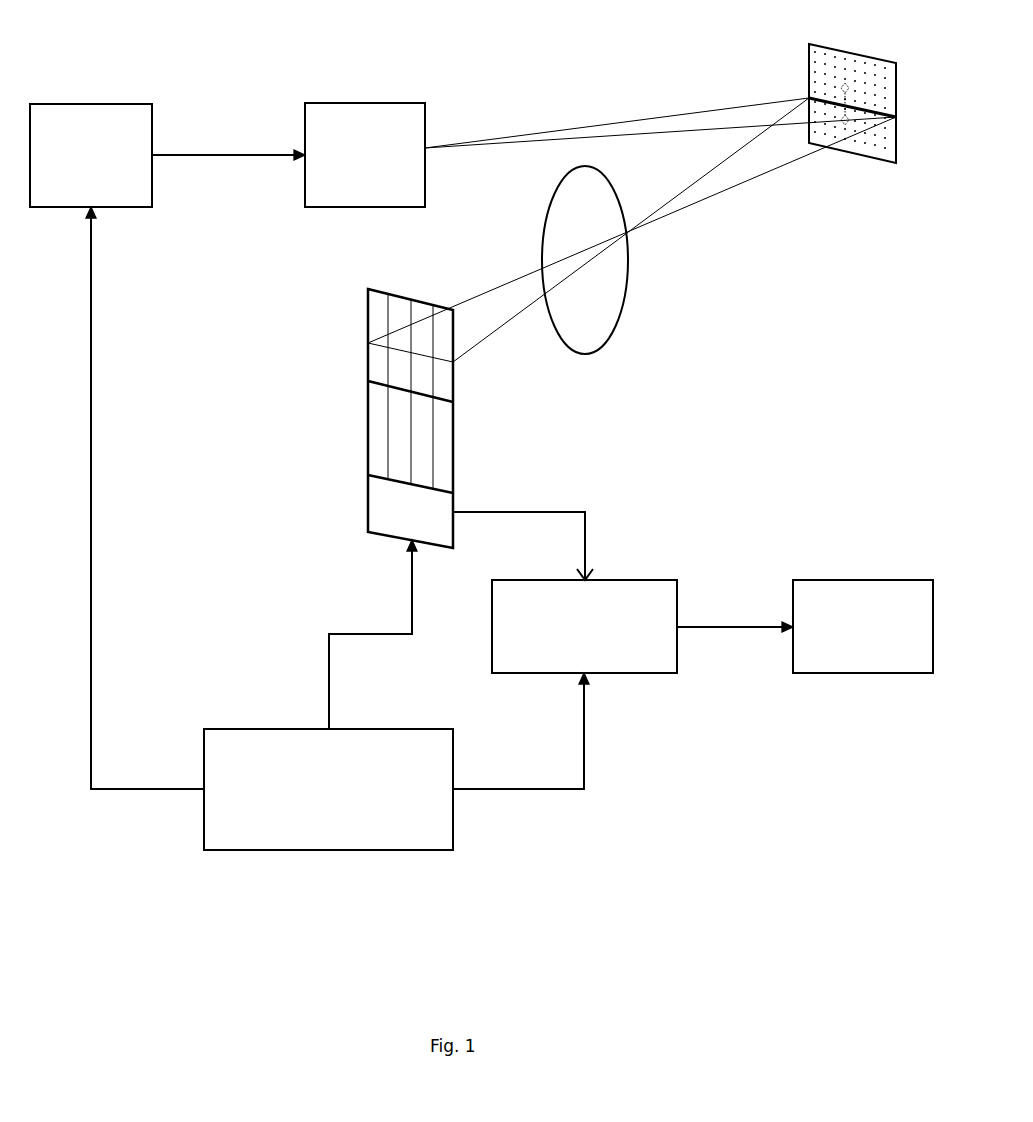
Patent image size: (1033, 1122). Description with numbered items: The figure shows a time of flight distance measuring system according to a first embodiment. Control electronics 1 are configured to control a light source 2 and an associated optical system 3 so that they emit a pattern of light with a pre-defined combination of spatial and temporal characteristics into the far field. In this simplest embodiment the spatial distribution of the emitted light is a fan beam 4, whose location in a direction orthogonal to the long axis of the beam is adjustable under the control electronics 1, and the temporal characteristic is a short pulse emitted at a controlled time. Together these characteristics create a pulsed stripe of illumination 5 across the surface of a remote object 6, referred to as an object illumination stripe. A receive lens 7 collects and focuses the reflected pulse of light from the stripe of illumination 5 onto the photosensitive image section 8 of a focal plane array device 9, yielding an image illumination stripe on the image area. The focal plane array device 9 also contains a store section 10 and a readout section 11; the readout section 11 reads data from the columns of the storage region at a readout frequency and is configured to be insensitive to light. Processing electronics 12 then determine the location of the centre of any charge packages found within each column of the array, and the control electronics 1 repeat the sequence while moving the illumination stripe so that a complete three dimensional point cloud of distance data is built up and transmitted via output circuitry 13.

The control electronics 1 is at (328, 789).
The light source 2 is at (91, 155).
The optical system 3 is at (365, 155).
The fan beam 4 is at (718, 120).
The stripe of illumination 5 is at (898, 117).
The remote object 6 is at (852, 93).
The receive lens 7 is at (599, 260).
The photosensitive image section 8 is at (373, 315).
The focal plane array device 9 is at (463, 393).
The store section 10 is at (368, 427).
The readout section 11 is at (367, 503).
The processing electronics 12 is at (584, 626).
The output circuitry 13 is at (863, 626).